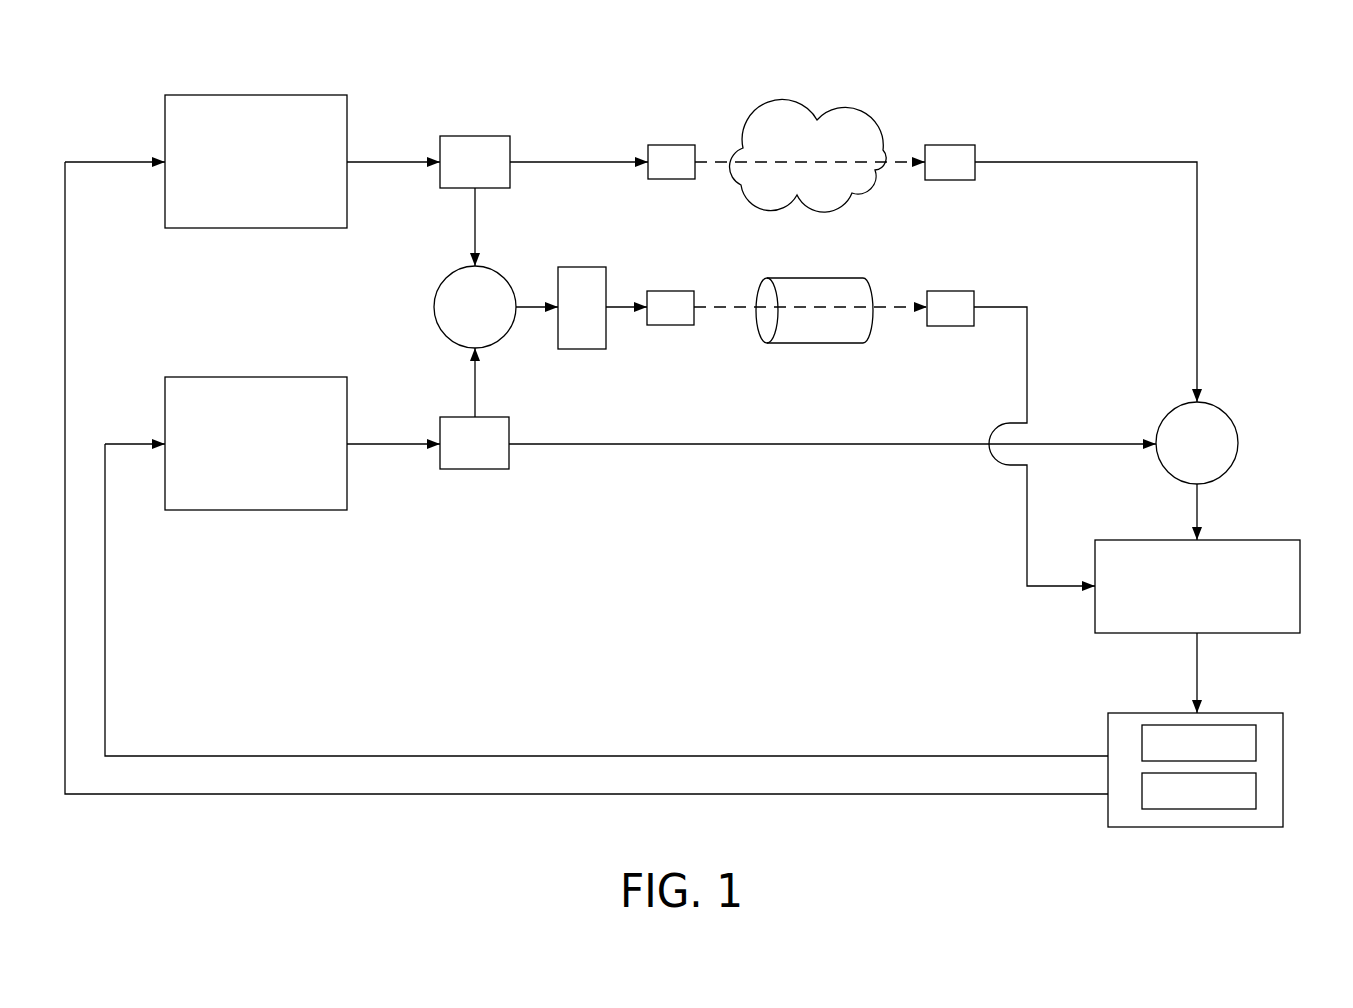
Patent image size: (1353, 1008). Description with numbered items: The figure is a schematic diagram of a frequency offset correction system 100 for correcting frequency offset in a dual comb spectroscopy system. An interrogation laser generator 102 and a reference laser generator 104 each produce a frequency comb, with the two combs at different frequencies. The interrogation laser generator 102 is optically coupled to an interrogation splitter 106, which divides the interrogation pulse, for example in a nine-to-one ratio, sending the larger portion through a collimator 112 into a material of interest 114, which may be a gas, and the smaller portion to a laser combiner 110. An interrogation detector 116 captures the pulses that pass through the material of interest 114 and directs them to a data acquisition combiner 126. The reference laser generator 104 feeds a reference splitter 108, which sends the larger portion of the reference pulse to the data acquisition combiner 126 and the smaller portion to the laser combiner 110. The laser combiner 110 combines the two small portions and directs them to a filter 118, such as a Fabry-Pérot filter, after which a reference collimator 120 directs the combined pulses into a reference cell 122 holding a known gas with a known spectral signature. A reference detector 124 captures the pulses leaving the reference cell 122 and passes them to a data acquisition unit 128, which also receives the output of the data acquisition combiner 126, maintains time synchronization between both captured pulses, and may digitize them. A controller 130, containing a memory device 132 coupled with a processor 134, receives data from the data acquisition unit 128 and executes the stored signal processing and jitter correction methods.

The frequency offset correction system 100 is at (1182, 80).
The interrogation laser generator 102 is at (207, 95).
The reference laser generator 104 is at (203, 377).
The interrogation splitter 106 is at (455, 136).
The reference splitter 108 is at (467, 469).
The laser combiner 110 is at (451, 270).
The collimator 112 is at (661, 145).
The material of interest 114 is at (840, 105).
The interrogation detector 116 is at (942, 145).
The filter 118 is at (583, 267).
The reference collimator 120 is at (655, 291).
The reference cell 122 is at (788, 278).
The reference detector 124 is at (947, 291).
The data acquisition combiner 126 is at (1172, 410).
The data acquisition unit 128 is at (1150, 540).
The controller 130 is at (1128, 713).
The memory device 132 is at (1256, 741).
The processor 134 is at (1256, 790).